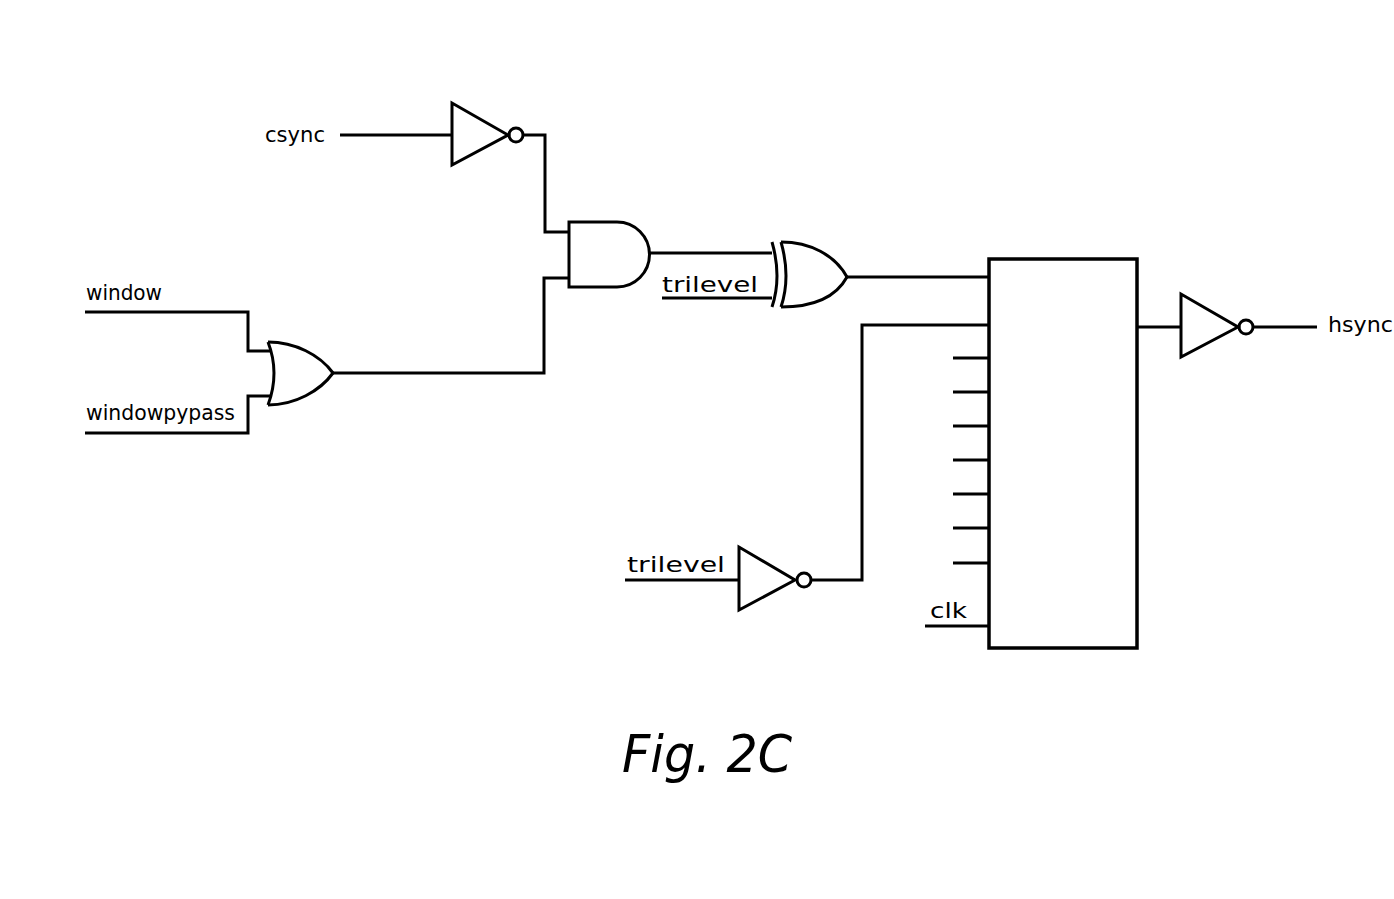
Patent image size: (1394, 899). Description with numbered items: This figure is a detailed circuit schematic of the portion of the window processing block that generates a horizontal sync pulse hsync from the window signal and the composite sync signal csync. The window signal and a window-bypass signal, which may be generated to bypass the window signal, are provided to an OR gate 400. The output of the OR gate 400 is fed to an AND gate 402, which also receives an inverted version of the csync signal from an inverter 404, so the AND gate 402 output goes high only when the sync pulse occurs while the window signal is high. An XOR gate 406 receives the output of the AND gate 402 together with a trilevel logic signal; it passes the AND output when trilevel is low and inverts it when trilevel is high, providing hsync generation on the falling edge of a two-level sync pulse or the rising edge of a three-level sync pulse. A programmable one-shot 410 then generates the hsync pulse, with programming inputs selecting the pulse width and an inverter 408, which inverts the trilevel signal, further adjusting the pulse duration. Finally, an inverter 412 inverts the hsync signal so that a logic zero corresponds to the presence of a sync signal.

The OR gate 400 is at (298, 342).
The AND gate 402 is at (593, 220).
The inverter 404 is at (487, 110).
The XOR gate 406 is at (820, 243).
The inverter 408 is at (768, 564).
The one-shot 410 is at (1050, 258).
The inverter 412 is at (1210, 343).